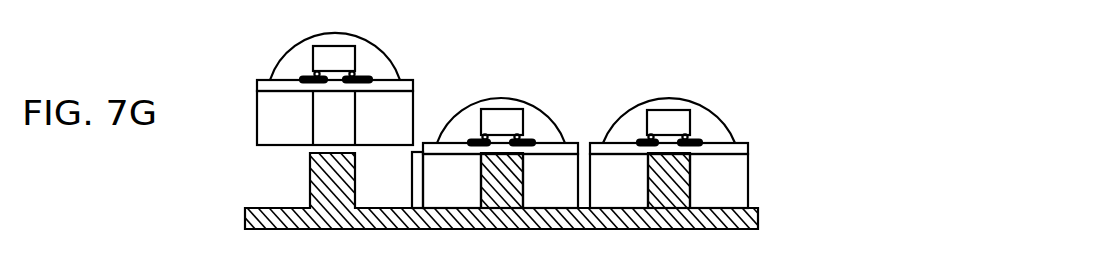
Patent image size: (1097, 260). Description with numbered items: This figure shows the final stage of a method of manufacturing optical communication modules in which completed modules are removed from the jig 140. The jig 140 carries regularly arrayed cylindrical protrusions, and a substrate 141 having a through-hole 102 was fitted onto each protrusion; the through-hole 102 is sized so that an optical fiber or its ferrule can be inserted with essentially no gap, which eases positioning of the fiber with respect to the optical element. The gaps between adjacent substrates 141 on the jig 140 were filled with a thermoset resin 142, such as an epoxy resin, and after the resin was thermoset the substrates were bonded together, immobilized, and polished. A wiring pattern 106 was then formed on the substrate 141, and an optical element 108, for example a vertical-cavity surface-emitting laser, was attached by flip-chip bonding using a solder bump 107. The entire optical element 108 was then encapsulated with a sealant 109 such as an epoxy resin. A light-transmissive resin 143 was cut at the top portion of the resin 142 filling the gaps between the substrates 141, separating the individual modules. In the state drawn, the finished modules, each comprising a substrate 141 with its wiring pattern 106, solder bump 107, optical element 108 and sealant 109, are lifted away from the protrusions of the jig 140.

The through-hole 102 is at (331, 128).
The wiring pattern 106 is at (368, 74).
The solder bump 107 is at (312, 75).
The optical element 108 is at (330, 55).
The sealant 109 is at (366, 58).
The jig 140 is at (758, 219).
The substrate 141 is at (268, 115).
The thermoset resin 142 is at (417, 157).
The light-transmissive resin 143 is at (260, 84).